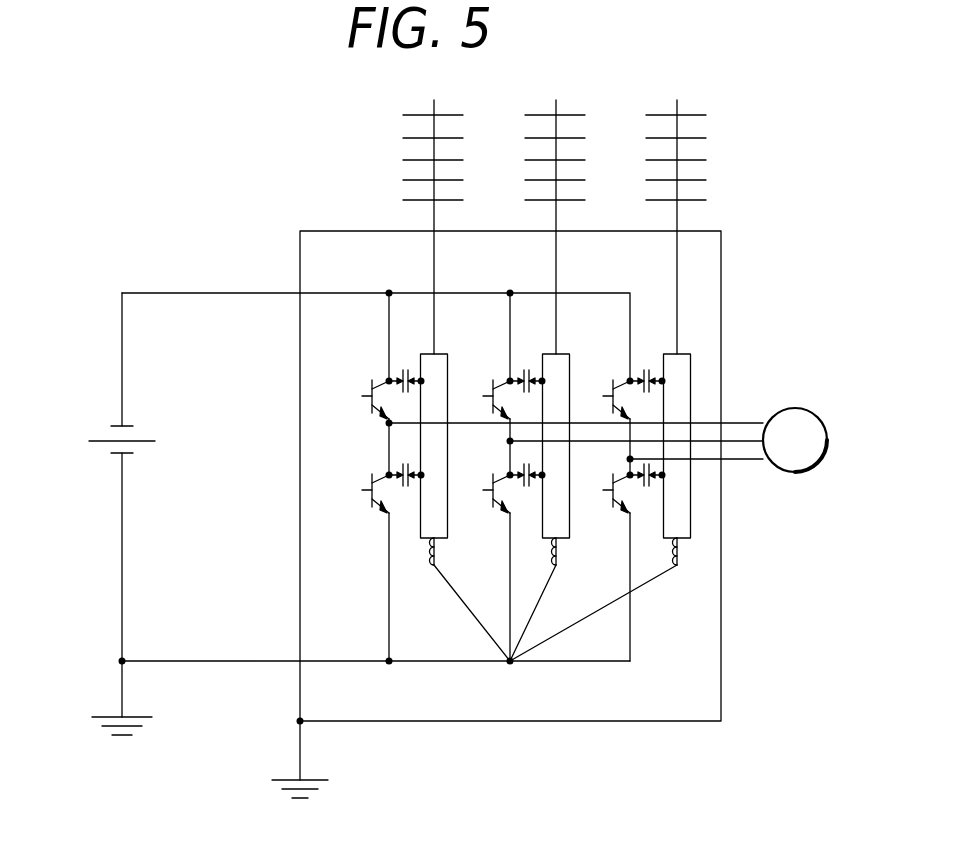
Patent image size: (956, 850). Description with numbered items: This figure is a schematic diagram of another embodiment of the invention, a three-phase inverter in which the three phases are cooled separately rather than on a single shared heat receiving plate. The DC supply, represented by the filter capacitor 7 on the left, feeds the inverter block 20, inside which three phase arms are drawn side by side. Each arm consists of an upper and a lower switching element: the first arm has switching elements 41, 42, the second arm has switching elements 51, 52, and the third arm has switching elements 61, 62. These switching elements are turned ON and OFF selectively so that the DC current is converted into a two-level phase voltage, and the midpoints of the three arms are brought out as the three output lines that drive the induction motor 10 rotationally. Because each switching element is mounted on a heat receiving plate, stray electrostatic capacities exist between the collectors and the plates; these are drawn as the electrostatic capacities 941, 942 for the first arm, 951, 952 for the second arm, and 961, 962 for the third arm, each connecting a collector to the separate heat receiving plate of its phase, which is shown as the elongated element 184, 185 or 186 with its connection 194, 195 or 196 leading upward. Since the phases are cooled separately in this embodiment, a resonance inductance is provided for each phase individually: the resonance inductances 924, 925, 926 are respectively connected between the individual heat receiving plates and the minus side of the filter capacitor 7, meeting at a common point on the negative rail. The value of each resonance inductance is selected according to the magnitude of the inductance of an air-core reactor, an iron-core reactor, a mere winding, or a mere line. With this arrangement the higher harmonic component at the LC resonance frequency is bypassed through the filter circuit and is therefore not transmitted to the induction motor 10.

The filter capacitor 7 is at (101, 454).
The induction motor 10 is at (789, 408).
The inverter circuit 20 is at (300, 231).
The switching element 41 is at (362, 396).
The switching element 42 is at (362, 491).
The switching element 51 is at (483, 396).
The switching element 52 is at (483, 491).
The switching element 61 is at (603, 396).
The switching element 62 is at (603, 491).
The resistor 184 is at (424, 355).
The resistor 185 is at (545, 357).
The resistor 186 is at (667, 347).
The input terminal 194 is at (434, 104).
The input terminal 195 is at (556, 104).
The input terminal 196 is at (679, 104).
The resonance inductance 924 is at (443, 581).
The resonance inductance 925 is at (565, 585).
The resonance inductance 926 is at (683, 598).
The electrostatic capacity 941 is at (401, 371).
The electrostatic capacity 942 is at (401, 466).
The electrostatic capacity 951 is at (525, 368).
The electrostatic capacity 952 is at (523, 466).
The electrostatic capacity 961 is at (646, 368).
The electrostatic capacity 962 is at (648, 488).